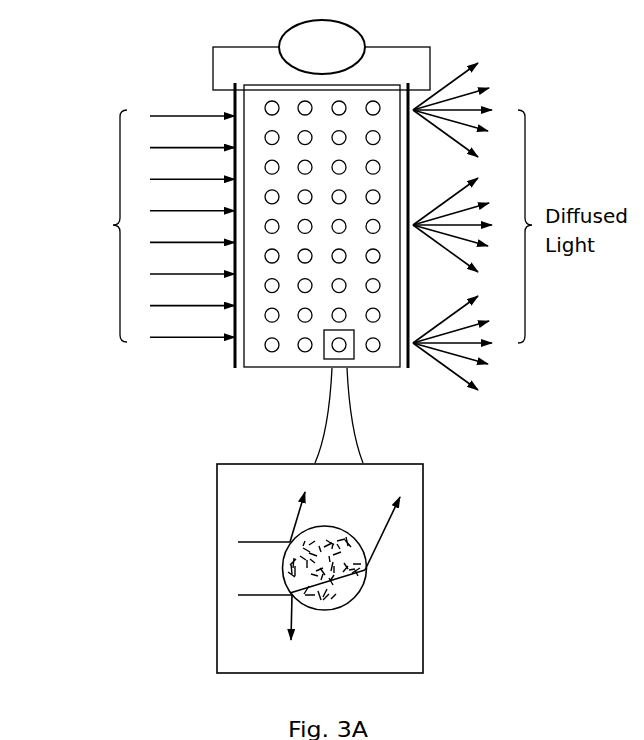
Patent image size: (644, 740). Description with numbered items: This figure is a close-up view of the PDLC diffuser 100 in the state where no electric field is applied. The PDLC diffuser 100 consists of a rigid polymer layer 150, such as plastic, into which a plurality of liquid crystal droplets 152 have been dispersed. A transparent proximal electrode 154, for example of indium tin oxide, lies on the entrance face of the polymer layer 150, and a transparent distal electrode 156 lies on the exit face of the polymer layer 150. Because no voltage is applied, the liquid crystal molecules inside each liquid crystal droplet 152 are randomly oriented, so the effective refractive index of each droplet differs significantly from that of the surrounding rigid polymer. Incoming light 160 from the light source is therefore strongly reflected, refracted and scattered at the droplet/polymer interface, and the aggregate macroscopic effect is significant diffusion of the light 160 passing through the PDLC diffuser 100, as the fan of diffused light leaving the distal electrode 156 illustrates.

The PDLC diffuser 100 is at (176, 62).
The rigid polymer layer 150 is at (297, 488).
The liquid crystal droplets 152 is at (342, 102).
The proximal electrode 154 is at (235, 352).
The distal electrode 156 is at (410, 368).
The incoming light 160 is at (155, 226).